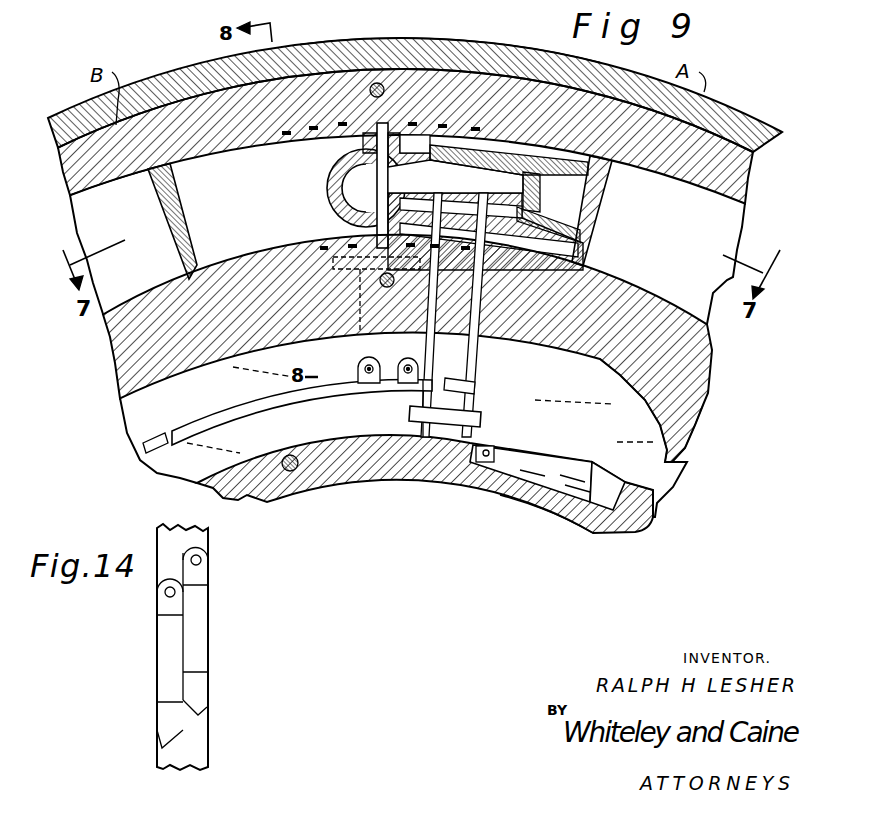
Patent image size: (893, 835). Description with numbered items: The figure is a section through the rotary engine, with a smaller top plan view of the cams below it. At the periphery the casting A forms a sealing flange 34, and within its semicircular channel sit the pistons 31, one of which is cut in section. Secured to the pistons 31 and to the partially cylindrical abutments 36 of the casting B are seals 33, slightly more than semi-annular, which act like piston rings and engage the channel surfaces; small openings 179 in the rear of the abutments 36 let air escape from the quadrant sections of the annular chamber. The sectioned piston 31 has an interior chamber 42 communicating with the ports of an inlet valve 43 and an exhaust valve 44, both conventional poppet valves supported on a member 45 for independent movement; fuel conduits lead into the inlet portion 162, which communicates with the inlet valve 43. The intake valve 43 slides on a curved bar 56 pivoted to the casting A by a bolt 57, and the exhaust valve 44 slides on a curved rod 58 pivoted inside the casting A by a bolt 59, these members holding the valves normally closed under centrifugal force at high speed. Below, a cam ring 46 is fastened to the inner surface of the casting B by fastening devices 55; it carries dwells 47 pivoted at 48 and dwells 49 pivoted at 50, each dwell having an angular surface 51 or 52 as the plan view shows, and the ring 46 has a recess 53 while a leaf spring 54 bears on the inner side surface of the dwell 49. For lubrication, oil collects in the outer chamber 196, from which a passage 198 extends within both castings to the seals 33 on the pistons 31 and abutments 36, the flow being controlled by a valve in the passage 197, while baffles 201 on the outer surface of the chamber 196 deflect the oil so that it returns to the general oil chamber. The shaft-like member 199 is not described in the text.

In FIG. 9, the piston 31 is at (598, 222).
In FIG. 9, the seals 33 is at (313, 136).
In FIG. 9, the sealing flange 34 is at (432, 40).
In FIG. 9, the abutments 36 is at (187, 186).
In FIG. 9, the interior chamber 42 is at (536, 172).
In FIG. 9, the inlet valve 43 is at (512, 200).
In FIG. 9, the exhaust valve 44 is at (440, 195).
In FIG. 9, the member 45 is at (410, 413).
In FIG. 9, the cam ring 46 is at (352, 435).
In FIG. 14, the cam ring 46 is at (170, 545).
In FIG. 9, the dwells 47 is at (577, 452).
In FIG. 14, the dwells 47 is at (160, 665).
In FIG. 9, the pivotal support 48 is at (470, 441).
In FIG. 14, the pivotal support 48 is at (166, 596).
In FIG. 9, the dwells 49 is at (620, 480).
In FIG. 14, the dwells 49 is at (200, 662).
In FIG. 9, the pivotal support 50 is at (497, 443).
In FIG. 14, the pivotal support 50 is at (204, 560).
In FIG. 14, the angular surface 51 is at (160, 745).
In FIG. 14, the angular surface 52 is at (206, 728).
In FIG. 9, the recess 53 is at (622, 490).
In FIG. 9, the leaf spring 54 is at (555, 509).
In FIG. 9, the fastening devices 55 is at (290, 455).
In FIG. 9, the curved bar 56 is at (452, 380).
In FIG. 9, the bolt 57 is at (430, 365).
In FIG. 9, the curved rod 58 is at (409, 358).
In FIG. 9, the bolt 59 is at (371, 358).
In FIG. 9, the inlet portion 162 is at (522, 207).
In FIG. 9, the small openings 179 is at (178, 220).
In FIG. 9, the outer chamber 196 is at (622, 408).
In FIG. 9, the passage 197 is at (340, 368).
In FIG. 9, the passage 198 is at (348, 250).
In FIG. 9, the shaft 199 is at (366, 222).
In FIG. 9, the baffles 201 is at (670, 442).